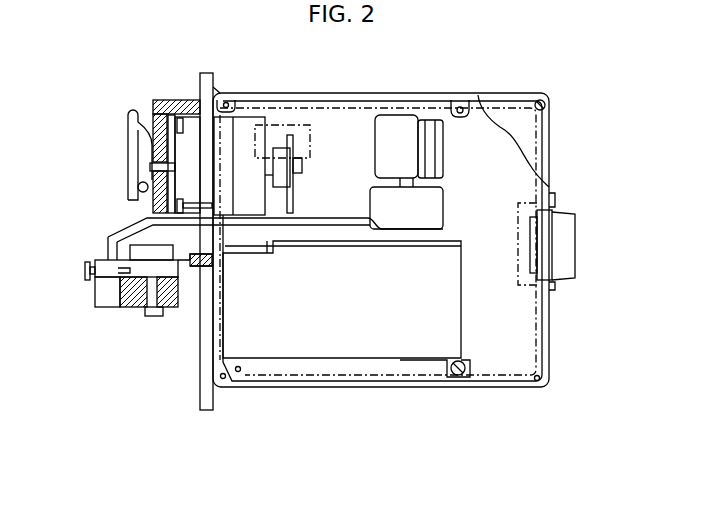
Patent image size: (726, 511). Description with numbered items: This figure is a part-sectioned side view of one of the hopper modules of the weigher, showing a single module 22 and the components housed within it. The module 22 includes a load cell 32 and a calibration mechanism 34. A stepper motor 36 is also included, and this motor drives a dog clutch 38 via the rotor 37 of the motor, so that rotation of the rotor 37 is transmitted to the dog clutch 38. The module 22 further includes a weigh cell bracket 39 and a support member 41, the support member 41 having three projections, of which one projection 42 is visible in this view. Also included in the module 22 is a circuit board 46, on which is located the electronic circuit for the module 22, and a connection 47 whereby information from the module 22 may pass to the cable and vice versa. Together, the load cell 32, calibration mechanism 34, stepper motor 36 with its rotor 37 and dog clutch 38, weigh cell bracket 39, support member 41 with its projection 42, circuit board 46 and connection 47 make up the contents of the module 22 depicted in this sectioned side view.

The module 22 is at (362, 71).
The load cell 32 is at (350, 348).
The calibration mechanism 34 is at (393, 128).
The stepper motor 36 is at (228, 142).
The rotor 37 is at (155, 165).
The dog clutch 38 is at (130, 122).
The weigh cell bracket 39 is at (255, 235).
The support member 41 is at (140, 272).
The projection 42 is at (92, 268).
The circuit board 46 is at (500, 364).
The connection 47 is at (565, 252).